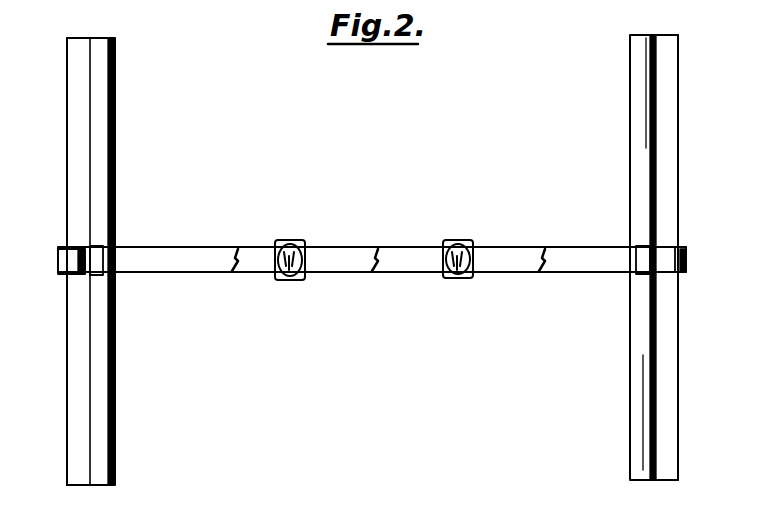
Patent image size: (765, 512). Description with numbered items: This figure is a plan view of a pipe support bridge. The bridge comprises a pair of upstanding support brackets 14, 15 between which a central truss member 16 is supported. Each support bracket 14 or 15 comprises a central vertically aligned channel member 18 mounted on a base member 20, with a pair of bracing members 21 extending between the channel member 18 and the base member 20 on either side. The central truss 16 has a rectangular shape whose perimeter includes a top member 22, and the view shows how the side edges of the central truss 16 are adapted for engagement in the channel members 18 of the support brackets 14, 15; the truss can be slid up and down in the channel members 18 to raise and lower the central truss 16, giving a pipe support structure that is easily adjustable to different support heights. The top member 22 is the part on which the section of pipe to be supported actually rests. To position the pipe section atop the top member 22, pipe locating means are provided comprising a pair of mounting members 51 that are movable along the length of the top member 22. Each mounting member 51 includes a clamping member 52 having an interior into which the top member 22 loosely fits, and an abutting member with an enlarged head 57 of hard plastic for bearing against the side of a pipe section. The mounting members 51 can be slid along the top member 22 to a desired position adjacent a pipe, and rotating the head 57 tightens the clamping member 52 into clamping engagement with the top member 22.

The support bracket 14 is at (126, 115).
The support bracket 15 is at (612, 92).
The central truss member 16 is at (210, 234).
The channel member 18 is at (112, 241).
The base member 20 is at (76, 103).
The bracing member 21 is at (112, 168).
The top member 22 is at (352, 252).
The mounting member 51 is at (281, 231).
The clamping member 52 is at (302, 243).
The enlarged head 57 is at (283, 278).